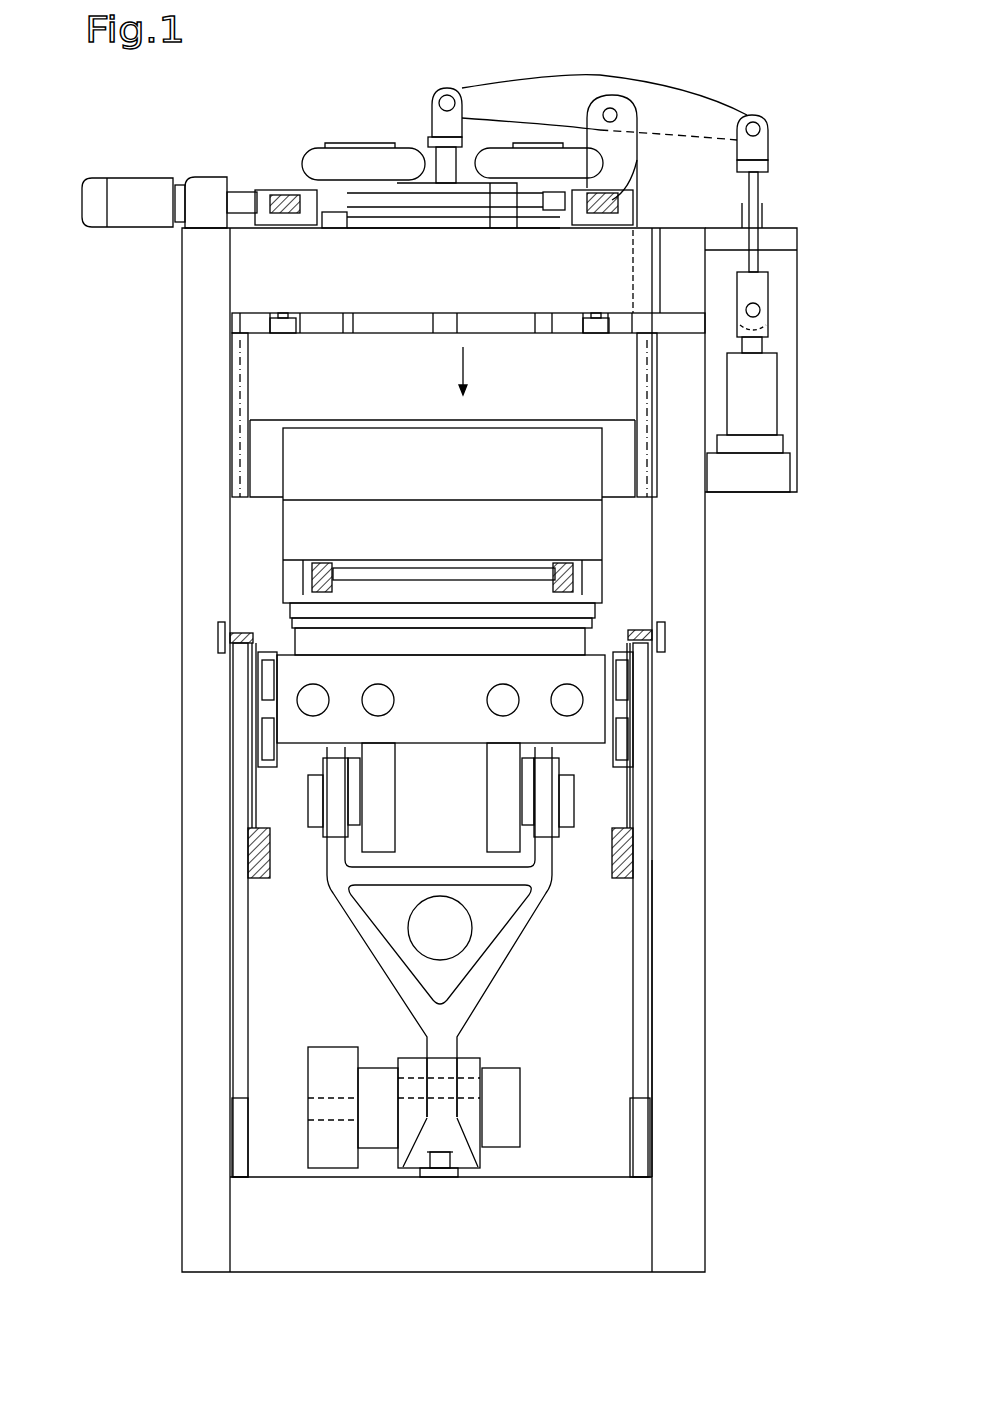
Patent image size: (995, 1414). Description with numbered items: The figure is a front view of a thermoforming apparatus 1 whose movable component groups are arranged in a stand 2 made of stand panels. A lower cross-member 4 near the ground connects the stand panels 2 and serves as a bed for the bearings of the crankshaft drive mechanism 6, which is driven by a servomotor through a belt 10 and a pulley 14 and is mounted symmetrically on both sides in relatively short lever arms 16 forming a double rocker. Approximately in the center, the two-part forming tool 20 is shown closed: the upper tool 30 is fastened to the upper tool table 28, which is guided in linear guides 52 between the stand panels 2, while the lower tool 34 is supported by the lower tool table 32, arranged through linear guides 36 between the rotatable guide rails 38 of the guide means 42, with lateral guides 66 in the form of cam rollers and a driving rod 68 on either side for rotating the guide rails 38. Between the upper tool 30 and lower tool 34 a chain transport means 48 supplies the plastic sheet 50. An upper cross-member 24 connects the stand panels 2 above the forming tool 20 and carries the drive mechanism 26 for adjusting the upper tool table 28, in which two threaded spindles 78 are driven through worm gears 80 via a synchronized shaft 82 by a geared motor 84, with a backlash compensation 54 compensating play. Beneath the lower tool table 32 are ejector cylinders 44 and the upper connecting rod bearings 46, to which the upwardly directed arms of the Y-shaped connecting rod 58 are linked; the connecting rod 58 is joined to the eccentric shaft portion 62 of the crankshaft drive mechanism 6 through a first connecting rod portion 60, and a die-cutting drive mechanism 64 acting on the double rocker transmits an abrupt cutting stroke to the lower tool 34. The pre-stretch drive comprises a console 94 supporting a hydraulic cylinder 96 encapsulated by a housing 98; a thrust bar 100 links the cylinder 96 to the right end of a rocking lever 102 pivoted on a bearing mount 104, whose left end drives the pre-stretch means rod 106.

The thermoforming apparatus 1 is at (315, 113).
The stand 2 is at (207, 897).
The cross-member 4 is at (562, 1227).
The crankshaft drive mechanism 6 is at (403, 1132).
The belt 10 is at (330, 1172).
The pulley 14 is at (325, 1148).
The lever arms 16 is at (382, 1087).
The two-part forming tool 20 is at (165, 540).
The cross-member 24 is at (643, 270).
The drive mechanism 26 is at (233, 320).
The upper tool table 28 is at (625, 387).
The upper tool 30 is at (295, 457).
The lower tool table 32 is at (580, 727).
The lower tool 34 is at (527, 592).
The linear guides 36 is at (257, 752).
The rotatable guide rails 38 is at (638, 985).
The guide means 42 is at (708, 857).
The ejector cylinders 44 is at (253, 848).
The upper connecting rod bearings 46 is at (313, 818).
The chain transport means 48 is at (313, 578).
The plastic sheet 50 is at (527, 570).
The linear guides 52 is at (235, 375).
The backlash compensation 54 is at (628, 145).
The connecting rod 58 is at (367, 932).
The first connecting rod portion 60 is at (440, 1055).
The eccentric shaft portion 62 is at (463, 1075).
The die-cutting drive mechanism 64 is at (333, 793).
The pivoted lever lateral guides 66 is at (660, 634).
The driving rod 68 is at (635, 868).
The threaded spindles 78 is at (285, 313).
The worm gears 80 is at (285, 195).
The synchronized shaft 82 is at (415, 195).
The geared motor 84 is at (137, 195).
The console 94 is at (770, 472).
The hydraulic cylinder 96 is at (760, 420).
The housing 98 is at (797, 292).
The thrust bar 100 is at (762, 225).
The rocking lever 102 is at (712, 115).
The bearing mount 104 is at (600, 108).
The pre-stretch means rod 106 is at (440, 165).